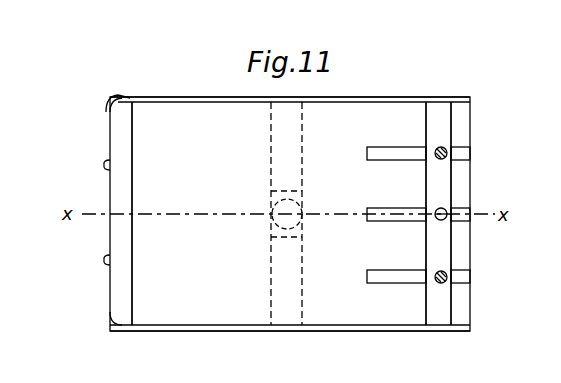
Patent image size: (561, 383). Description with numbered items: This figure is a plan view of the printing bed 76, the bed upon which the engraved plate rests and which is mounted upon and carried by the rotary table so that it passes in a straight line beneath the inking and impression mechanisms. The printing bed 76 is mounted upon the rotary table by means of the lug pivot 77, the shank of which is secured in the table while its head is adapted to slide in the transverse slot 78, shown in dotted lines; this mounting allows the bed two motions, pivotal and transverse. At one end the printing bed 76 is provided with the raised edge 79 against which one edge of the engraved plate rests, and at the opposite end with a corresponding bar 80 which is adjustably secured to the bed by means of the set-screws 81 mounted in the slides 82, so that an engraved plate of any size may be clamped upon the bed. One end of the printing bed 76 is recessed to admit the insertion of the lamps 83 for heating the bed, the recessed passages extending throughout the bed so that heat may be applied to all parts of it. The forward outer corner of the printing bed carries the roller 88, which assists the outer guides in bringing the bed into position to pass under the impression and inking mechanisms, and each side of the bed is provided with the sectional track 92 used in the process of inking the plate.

The printing bed 76 is at (348, 116).
The lug pivot 77 is at (274, 207).
The transverse slot 78 is at (285, 317).
The raised edge 79 is at (115, 297).
The bar 80 is at (442, 304).
The set-screws 81 is at (447, 150).
The slides 82 is at (464, 155).
The lamps 83 is at (104, 164).
The roller 88 is at (107, 104).
The sectional track 92 is at (168, 98).